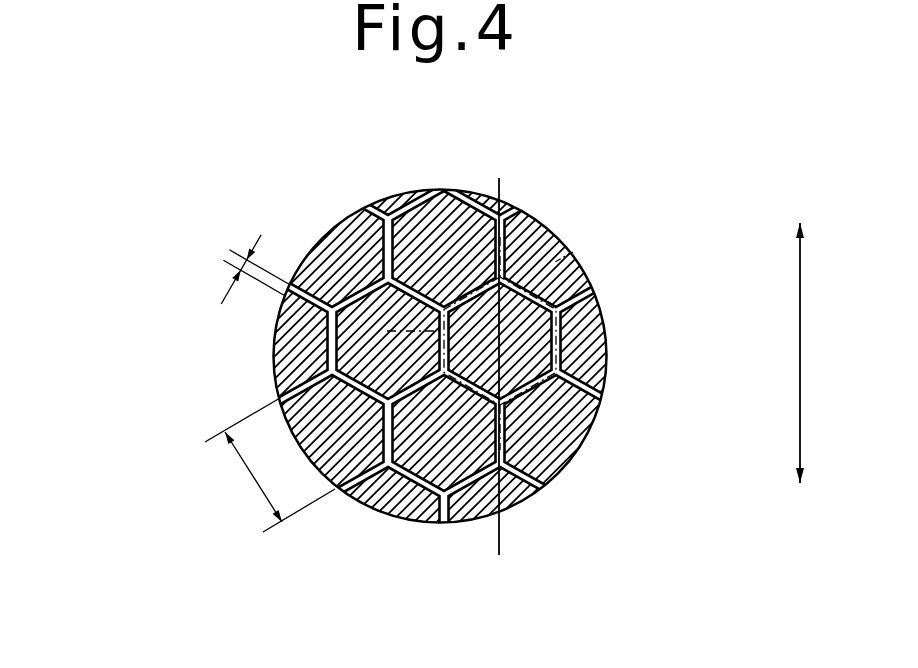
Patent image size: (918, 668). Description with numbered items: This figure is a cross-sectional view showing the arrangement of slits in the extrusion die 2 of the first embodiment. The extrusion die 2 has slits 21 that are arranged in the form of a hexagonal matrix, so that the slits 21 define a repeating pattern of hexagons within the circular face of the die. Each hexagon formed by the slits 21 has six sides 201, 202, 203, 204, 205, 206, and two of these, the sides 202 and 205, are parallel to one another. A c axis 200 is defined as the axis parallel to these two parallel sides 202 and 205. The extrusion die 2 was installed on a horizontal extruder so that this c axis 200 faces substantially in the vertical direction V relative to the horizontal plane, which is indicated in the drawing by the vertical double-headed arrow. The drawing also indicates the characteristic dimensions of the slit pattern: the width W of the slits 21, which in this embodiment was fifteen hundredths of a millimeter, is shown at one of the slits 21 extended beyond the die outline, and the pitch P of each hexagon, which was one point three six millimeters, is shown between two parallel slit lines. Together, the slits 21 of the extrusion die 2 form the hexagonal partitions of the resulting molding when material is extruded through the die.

The extrusion die 2 is at (560, 199).
The slits 21 is at (603, 282).
The c axis 200 is at (499, 530).
The side 201 is at (497, 280).
The side 202 is at (382, 331).
The side 203 is at (404, 516).
The side 204 is at (526, 385).
The side 205 is at (556, 323).
The side 206 is at (573, 252).
The width of slits W is at (232, 249).
The pitch P is at (270, 465).
The vertical direction V is at (815, 353).